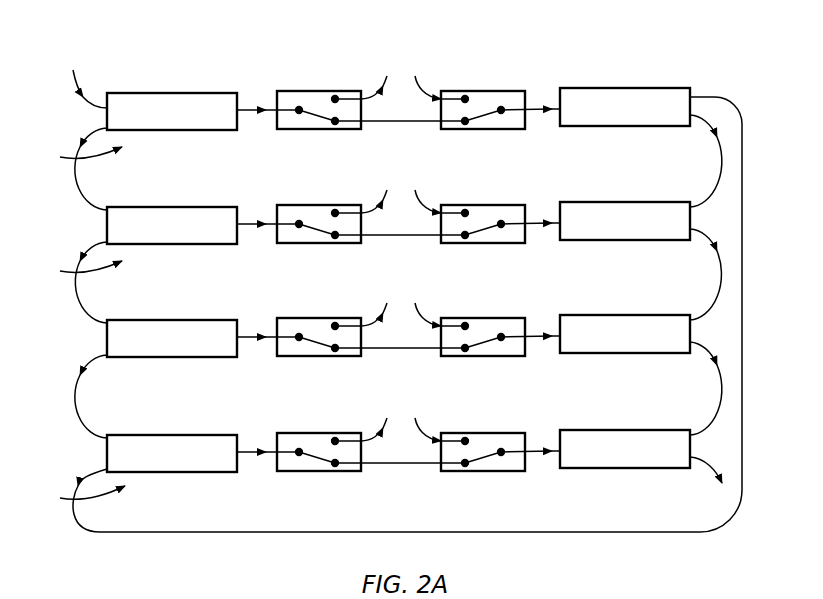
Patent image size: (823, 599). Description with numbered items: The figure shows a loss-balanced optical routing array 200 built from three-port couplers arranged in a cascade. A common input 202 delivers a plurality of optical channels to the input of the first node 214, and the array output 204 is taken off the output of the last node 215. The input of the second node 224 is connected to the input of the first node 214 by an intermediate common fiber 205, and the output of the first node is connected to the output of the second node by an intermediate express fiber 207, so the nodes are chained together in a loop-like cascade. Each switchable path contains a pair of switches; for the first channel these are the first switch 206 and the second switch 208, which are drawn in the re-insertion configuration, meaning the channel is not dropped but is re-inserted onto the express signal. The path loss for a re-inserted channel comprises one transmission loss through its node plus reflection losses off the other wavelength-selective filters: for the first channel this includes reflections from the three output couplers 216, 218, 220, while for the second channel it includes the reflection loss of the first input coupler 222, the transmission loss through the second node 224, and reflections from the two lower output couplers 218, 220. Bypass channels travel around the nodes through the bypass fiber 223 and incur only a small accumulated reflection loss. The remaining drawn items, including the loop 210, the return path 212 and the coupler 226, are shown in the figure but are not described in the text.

The optical routing array 200 is at (729, 78).
The common input 202 is at (100, 108).
The array output 204 is at (703, 473).
The intermediate common fiber 205 is at (82, 193).
The first switch 206 is at (293, 91).
The intermediate express fiber 207 is at (707, 128).
The second switch 208 is at (457, 91).
The fiber loop between third and fourth demultiplexer stages 210 is at (74, 328).
The return fiber path 212 is at (729, 227).
The first node 214 is at (78, 167).
The last node 215 is at (81, 500).
The output coupler 216 is at (588, 202).
The output coupler 218 is at (588, 315).
The output coupler 220 is at (590, 430).
The first input coupler 222 is at (152, 93).
The bypass fiber 223 is at (418, 532).
The second node 224 is at (152, 435).
The first multiplexer 226 is at (586, 88).